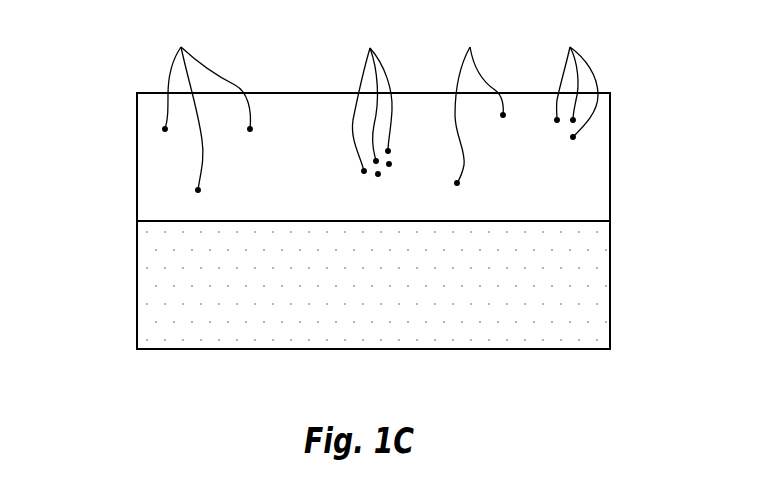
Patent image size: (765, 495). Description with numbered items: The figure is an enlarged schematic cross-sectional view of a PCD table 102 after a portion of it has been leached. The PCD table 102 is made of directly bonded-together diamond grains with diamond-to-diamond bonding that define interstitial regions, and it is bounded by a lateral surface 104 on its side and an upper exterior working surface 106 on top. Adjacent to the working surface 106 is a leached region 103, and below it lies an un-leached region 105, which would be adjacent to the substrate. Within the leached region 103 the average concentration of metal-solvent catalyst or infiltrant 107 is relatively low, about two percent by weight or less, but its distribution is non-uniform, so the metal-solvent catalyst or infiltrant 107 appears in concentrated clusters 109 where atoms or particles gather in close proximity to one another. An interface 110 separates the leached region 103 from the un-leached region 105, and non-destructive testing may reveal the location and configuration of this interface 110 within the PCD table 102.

The PCD table 102 is at (617, 93).
The leached region 103 is at (128, 93).
The lateral surface 104 is at (137, 188).
The un-leached region 105 is at (128, 221).
The upper exterior working surface 106 is at (300, 92).
The metal-solvent catalyst or infiltrant 107 is at (380, 107).
The concentrated clusters 109 is at (396, 140).
The interface 110 is at (571, 220).